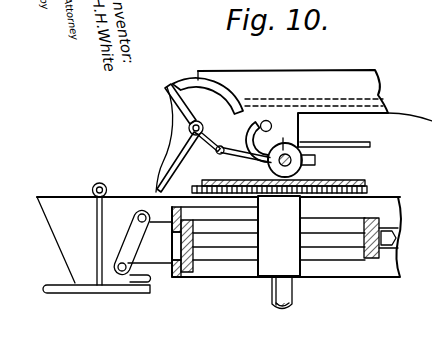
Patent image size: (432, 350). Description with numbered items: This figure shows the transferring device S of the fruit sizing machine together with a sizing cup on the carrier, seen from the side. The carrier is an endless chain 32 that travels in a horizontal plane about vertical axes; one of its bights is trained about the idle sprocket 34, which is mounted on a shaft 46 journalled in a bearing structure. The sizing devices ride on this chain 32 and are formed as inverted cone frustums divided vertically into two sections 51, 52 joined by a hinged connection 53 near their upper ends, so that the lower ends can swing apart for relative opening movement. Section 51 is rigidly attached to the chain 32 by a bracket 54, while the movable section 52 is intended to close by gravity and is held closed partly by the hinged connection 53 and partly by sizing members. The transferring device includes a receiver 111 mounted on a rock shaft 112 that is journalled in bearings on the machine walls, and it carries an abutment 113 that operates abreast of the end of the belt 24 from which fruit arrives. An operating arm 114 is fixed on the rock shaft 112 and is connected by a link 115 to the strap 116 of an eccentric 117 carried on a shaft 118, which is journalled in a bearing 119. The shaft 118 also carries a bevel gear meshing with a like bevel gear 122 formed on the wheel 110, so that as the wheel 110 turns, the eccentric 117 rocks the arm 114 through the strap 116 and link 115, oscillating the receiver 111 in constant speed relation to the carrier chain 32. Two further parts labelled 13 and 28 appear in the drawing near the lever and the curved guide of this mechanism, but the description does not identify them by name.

The frame 13 is at (147, 97).
The belt 24 is at (372, 133).
The curved guide 28 is at (258, 120).
The chain 32 is at (202, 274).
The idle sprocket 34 is at (356, 253).
The shaft 46 is at (274, 293).
The section 51 is at (132, 188).
The section 52 is at (61, 186).
The hinged connection 53 is at (99, 183).
The bracket 54 is at (158, 257).
The wheel 110 is at (368, 190).
The receiver 111 is at (165, 140).
The rock shaft 112 is at (189, 126).
The abutment 113 is at (183, 84).
The operating arm 114 is at (180, 162).
The link 115 is at (235, 149).
The strap 116 is at (316, 161).
The eccentric 117 is at (293, 156).
The shaft 118 is at (281, 129).
The bearing 119 is at (277, 117).
The bevel gear 122 is at (347, 182).